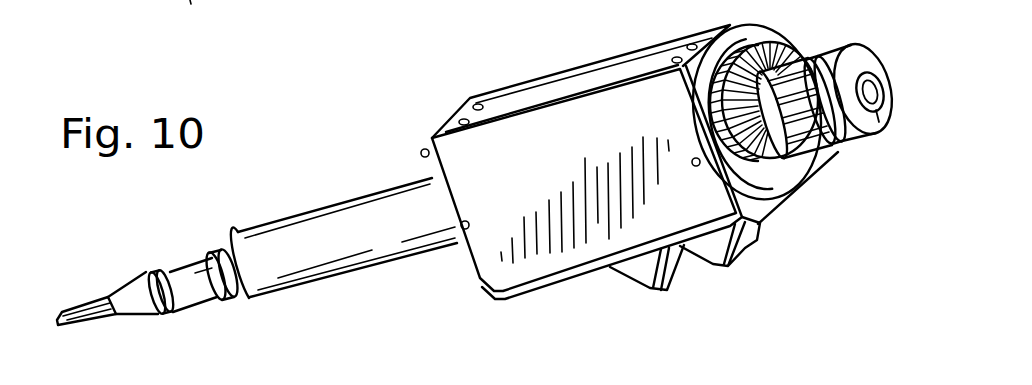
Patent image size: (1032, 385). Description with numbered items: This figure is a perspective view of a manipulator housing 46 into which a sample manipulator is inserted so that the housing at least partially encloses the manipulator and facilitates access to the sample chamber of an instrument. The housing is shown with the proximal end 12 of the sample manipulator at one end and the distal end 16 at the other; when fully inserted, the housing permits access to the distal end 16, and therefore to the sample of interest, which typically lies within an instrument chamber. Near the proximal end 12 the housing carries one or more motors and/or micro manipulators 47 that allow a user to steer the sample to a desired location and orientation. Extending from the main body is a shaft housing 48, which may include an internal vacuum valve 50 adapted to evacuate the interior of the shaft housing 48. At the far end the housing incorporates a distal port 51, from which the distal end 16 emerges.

The proximal end 12 is at (865, 24).
The distal end 16 is at (60, 304).
The manipulator housing 46 is at (531, 201).
The micro manipulators 47 is at (774, 30).
The shaft housing 48 is at (318, 285).
The internal vacuum valve 50 is at (321, 222).
The distal port 51 is at (140, 288).